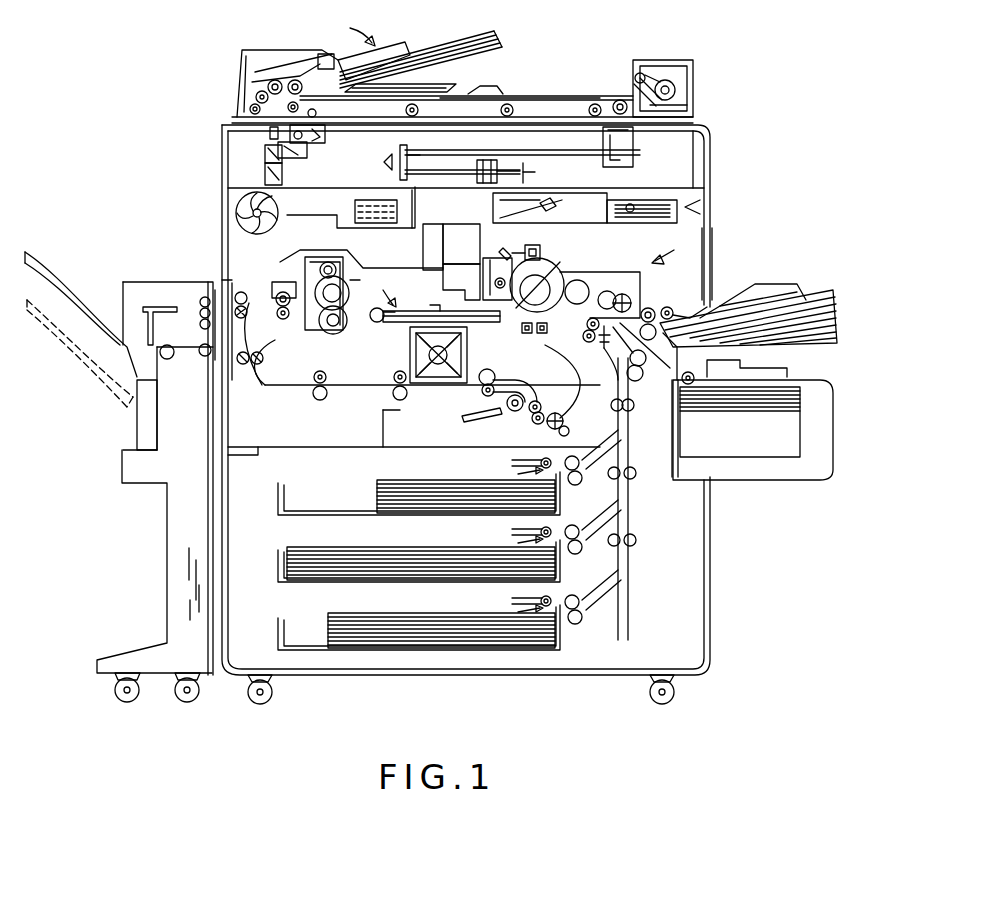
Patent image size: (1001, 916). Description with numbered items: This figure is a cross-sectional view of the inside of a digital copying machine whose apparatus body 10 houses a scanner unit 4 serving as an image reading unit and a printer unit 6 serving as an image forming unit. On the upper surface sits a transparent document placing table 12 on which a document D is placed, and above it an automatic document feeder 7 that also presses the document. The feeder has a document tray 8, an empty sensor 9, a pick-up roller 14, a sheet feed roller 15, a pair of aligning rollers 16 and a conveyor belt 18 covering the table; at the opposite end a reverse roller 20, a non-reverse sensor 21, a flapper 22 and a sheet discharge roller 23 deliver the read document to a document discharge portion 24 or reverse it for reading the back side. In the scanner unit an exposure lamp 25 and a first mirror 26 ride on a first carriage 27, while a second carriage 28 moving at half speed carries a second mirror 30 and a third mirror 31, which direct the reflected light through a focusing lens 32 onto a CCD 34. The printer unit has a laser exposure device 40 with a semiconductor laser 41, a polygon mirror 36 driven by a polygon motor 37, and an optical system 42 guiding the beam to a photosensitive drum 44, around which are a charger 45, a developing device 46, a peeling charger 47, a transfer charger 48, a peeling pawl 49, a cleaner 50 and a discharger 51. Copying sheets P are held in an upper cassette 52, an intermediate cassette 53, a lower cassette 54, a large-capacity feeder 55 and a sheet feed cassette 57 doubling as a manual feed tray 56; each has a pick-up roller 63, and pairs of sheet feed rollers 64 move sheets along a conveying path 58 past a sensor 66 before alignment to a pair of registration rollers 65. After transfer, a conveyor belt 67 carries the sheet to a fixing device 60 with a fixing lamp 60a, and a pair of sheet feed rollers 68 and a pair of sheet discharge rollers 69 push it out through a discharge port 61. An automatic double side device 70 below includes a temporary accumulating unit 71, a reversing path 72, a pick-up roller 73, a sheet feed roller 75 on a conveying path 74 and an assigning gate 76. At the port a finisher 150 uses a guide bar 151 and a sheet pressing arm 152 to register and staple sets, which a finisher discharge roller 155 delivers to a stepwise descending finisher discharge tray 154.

The scanner unit 4 is at (463, 141).
The printer unit 6 is at (668, 248).
The automatic document feeder 7 is at (354, 27).
The document tray 8 is at (396, 55).
The empty sensor 9 is at (322, 54).
The apparatus body 10 is at (711, 586).
The document placing table 12 is at (562, 110).
The pick-up roller 14 is at (280, 62).
The sheet feed roller 15 is at (256, 93).
The pair of aligning rollers 16 is at (250, 110).
The conveyor belt 18 is at (452, 92).
The reverse roller 20 is at (695, 88).
The non-reverse sensor 21 is at (698, 110).
The flapper 22 is at (663, 80).
The sheet discharge roller 23 is at (638, 73).
The document discharge portion 24 is at (495, 92).
The exposure lamp 25 is at (326, 136).
The first mirror 26 is at (308, 150).
The first carriage 27 is at (268, 135).
The second carriage 28 is at (264, 152).
The second mirror 30 is at (264, 176).
The third mirror 31 is at (283, 186).
The focusing lens 32 is at (488, 150).
The CCD 34 is at (536, 172).
The polygon mirror 36 is at (668, 200).
The polygon motor 37 is at (708, 238).
The laser exposure device 40 is at (712, 197).
The semiconductor laser 41 is at (621, 167).
The optical system 42 is at (490, 208).
The photosensitive drum 44 is at (557, 265).
The charger 45 is at (546, 256).
The developing device 46 is at (641, 285).
The peeling charger 47 is at (470, 333).
The transfer charger 48 is at (528, 335).
The peeling pawl 49 is at (460, 312).
The cleaner 50 is at (451, 262).
The discharger 51 is at (510, 257).
The upper cassette 52 is at (286, 498).
The intermediate cassette 53 is at (286, 566).
The lower cassette 54 is at (286, 634).
The large-capacity feeder 55 is at (772, 468).
The manual feed tray 56 is at (765, 290).
The sheet feed cassette 57 is at (831, 290).
The conveying path 58 is at (384, 288).
The fixing device 60 is at (352, 262).
The fixing lamp 60a is at (338, 333).
The discharge port 61 is at (210, 290).
The pick-up roller 63 is at (707, 300).
The pairs of sheet feed rollers 64 is at (655, 306).
The pair of registration rollers 65 is at (586, 340).
The sensor before alignment 66 is at (603, 348).
The conveyor belt 67 is at (378, 323).
The pair of sheet feed rollers 68 is at (287, 320).
The pair of sheet discharge rollers 69 is at (256, 234).
The automatic double side device 70 is at (268, 395).
The temporary accumulating unit 71 is at (432, 432).
The reversing path 72 is at (298, 390).
The pick-up roller 73 is at (482, 420).
The conveying path 74 is at (536, 381).
The sheet feed roller 75 is at (547, 423).
The assigning gate 76 is at (270, 304).
The finisher 150 is at (122, 305).
The guide bar 151 is at (152, 305).
The sheet pressing arm 152 is at (203, 345).
The finisher discharge tray 154 is at (62, 275).
The finisher discharge roller 155 is at (168, 362).
The copying sheet P is at (395, 486).
The document D is at (470, 38).